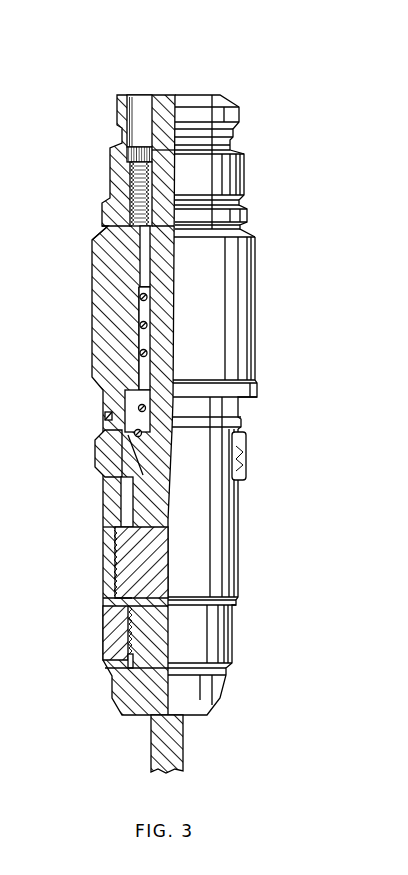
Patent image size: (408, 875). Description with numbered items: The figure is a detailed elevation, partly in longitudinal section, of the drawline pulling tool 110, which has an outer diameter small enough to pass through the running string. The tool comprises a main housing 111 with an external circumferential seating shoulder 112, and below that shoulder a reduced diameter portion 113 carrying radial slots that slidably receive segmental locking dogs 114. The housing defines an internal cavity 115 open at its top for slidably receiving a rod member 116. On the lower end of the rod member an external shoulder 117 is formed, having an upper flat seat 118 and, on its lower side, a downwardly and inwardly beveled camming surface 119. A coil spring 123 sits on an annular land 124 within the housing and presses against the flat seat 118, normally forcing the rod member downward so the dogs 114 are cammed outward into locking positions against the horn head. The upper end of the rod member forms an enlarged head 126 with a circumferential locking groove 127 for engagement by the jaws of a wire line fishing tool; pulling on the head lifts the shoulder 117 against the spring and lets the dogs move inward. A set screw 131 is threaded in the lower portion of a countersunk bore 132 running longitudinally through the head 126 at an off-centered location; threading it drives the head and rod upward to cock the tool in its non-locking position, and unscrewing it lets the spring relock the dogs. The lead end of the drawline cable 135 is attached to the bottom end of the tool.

The drawline pulling tool 110 is at (258, 305).
The main housing 111 is at (103, 331).
The seating shoulder 112 is at (254, 385).
The reduced diameter portion 113 is at (104, 511).
The segmental locking dogs 114 is at (246, 447).
The internal cavity 115 is at (143, 341).
The rod member 116 is at (108, 230).
The external shoulder 117 is at (131, 452).
The flat seat 118 is at (132, 416).
The camming surface 119 is at (127, 488).
The coil spring 123 is at (140, 297).
The annular land 124 is at (139, 288).
The enlarged head 126 is at (244, 172).
The locking groove 127 is at (233, 137).
The set screw 131 is at (133, 152).
The countersunk bore 132 is at (140, 113).
The drawline cable 135 is at (185, 745).